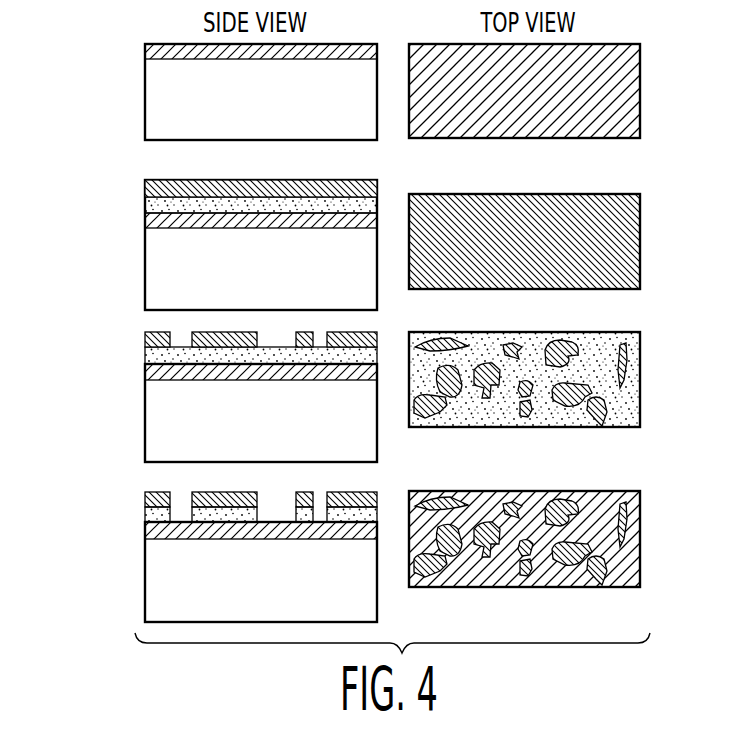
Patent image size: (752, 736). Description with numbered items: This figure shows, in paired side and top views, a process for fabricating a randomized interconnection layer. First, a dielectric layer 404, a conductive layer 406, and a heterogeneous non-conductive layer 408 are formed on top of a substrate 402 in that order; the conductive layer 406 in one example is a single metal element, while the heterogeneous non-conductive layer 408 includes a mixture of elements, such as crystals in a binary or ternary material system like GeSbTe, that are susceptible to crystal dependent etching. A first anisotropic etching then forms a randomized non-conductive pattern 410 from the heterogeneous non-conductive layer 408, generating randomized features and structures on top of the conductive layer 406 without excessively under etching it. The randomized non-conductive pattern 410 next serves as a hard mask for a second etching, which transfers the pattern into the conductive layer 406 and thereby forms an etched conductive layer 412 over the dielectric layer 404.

The substrate 402 is at (158, 97).
The dielectric layer 404 is at (148, 53).
The conductive layer 406 is at (155, 203).
The heterogeneous non-conductive layer 408 is at (156, 190).
The randomized non-conductive pattern 410 is at (146, 342).
The etched conductive layer 412 is at (147, 515).